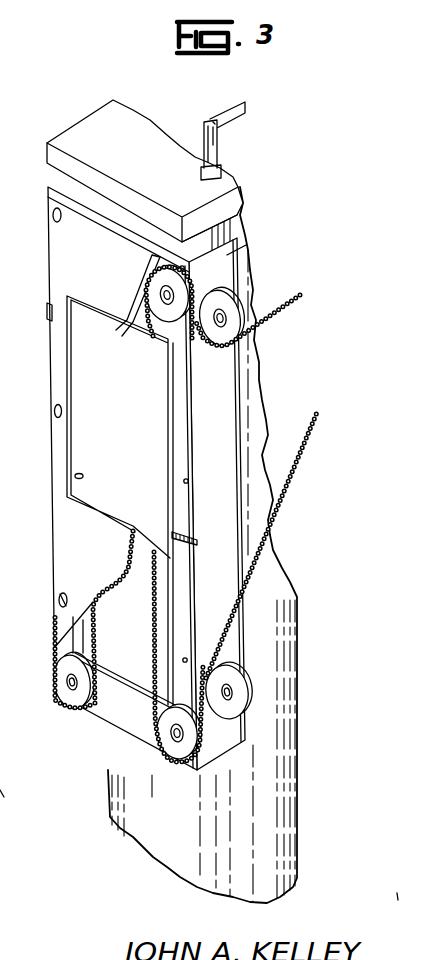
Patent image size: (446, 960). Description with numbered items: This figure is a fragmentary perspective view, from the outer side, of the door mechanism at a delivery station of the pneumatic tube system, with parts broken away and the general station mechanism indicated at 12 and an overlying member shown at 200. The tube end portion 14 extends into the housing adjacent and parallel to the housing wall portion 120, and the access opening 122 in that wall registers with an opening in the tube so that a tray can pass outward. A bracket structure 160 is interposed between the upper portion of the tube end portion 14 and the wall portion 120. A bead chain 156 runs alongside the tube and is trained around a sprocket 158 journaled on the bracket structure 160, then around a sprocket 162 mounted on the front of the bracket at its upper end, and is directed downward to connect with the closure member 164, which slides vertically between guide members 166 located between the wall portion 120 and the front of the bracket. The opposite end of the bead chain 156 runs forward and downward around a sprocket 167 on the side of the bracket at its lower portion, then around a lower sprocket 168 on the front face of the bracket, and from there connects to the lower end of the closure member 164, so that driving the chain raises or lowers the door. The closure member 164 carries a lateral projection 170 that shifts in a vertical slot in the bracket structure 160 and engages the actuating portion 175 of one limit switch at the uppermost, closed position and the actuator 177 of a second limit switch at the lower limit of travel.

The frame assembly 12 is at (40, 250).
The tube end portion 14 is at (163, 847).
The wall portion 120 is at (65, 540).
The access opening 122 is at (78, 478).
The bead chain 156 is at (284, 479).
The sprocket 158 is at (230, 306).
The bracket structure 160 is at (246, 245).
The sprocket 162 is at (172, 312).
The closure member 164 is at (147, 436).
The guide members 166 is at (158, 628).
The sprocket 167 is at (238, 677).
The lower sprocket 168 is at (182, 748).
The lateral projection 170 is at (47, 307).
The actuating portion 175 is at (11, 360).
The actuator 177 is at (12, 591).
The block 200 is at (82, 133).